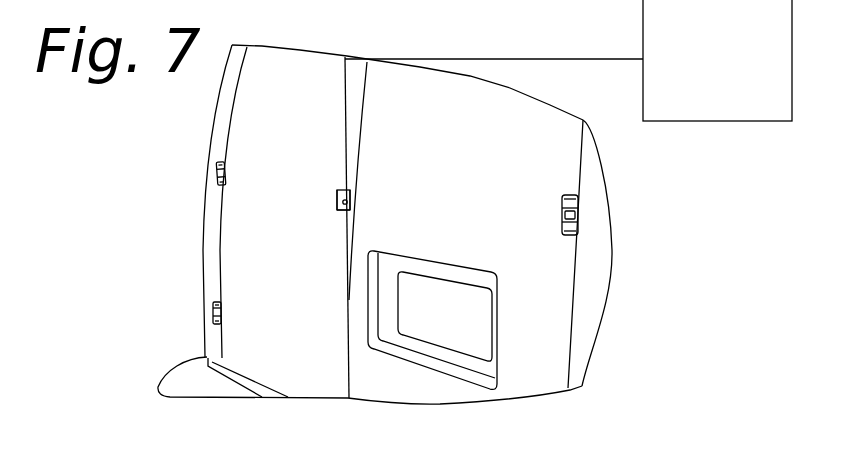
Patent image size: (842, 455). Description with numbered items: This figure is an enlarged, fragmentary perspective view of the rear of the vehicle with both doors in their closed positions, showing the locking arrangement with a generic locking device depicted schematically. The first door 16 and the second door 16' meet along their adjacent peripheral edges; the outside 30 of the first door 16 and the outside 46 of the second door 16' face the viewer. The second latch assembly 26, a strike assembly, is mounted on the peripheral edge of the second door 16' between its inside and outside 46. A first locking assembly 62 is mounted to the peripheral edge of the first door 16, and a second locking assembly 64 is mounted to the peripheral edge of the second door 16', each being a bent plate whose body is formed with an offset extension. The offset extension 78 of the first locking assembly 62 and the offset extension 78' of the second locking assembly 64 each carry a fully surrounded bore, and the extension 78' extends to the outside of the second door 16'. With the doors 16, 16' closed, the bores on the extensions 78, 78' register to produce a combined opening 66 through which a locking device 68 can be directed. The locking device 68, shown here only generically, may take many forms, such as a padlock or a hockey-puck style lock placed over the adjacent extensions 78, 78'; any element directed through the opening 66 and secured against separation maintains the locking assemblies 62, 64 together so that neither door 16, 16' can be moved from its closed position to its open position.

The first door 16 is at (478, 227).
The second door 16' is at (275, 201).
The second latch assembly 26 is at (607, 448).
The outside 30 is at (407, 382).
The outside 46 is at (285, 367).
The first locking assembly 62 is at (351, 206).
The second locking assembly 64 is at (337, 205).
The opening 66 is at (347, 200).
The locking device 68 is at (696, 99).
The offset extension 78 is at (301, 177).
The offset extension 78' is at (383, 220).